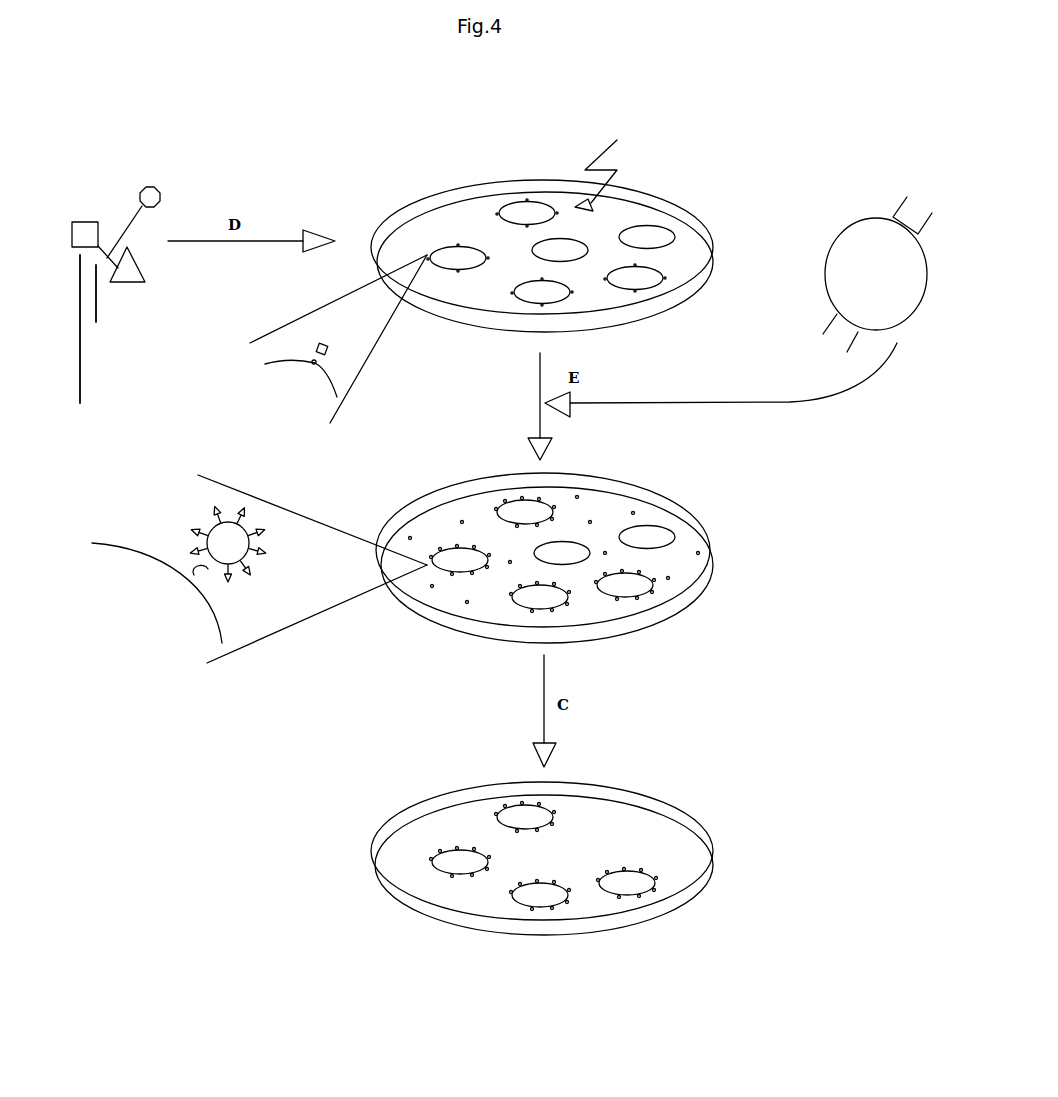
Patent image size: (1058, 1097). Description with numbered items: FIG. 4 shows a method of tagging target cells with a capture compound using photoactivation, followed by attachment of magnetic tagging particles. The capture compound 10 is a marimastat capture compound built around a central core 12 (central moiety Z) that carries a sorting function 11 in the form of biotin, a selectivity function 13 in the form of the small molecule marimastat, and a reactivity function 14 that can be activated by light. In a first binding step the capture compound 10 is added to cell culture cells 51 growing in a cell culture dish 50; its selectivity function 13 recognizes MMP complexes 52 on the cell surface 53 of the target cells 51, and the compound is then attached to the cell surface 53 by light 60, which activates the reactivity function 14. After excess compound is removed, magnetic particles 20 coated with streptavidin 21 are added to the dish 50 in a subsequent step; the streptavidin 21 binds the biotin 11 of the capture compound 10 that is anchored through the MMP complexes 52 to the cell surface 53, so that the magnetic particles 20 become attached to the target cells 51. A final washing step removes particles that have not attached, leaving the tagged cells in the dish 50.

The capture compound 10 is at (90, 210).
The sorting function 11 is at (84, 346).
The central core 12 is at (95, 308).
The selectivity function 13 is at (133, 293).
The reactivity function 14 is at (140, 188).
The magnetic particle 20 is at (847, 250).
The streptavidin 21 is at (823, 322).
The cell culture dish 50 is at (500, 295).
The cell culture cells 51 is at (288, 373).
The MMP complex 52 is at (318, 362).
The cell surface 53 is at (293, 365).
The light 60 is at (605, 144).